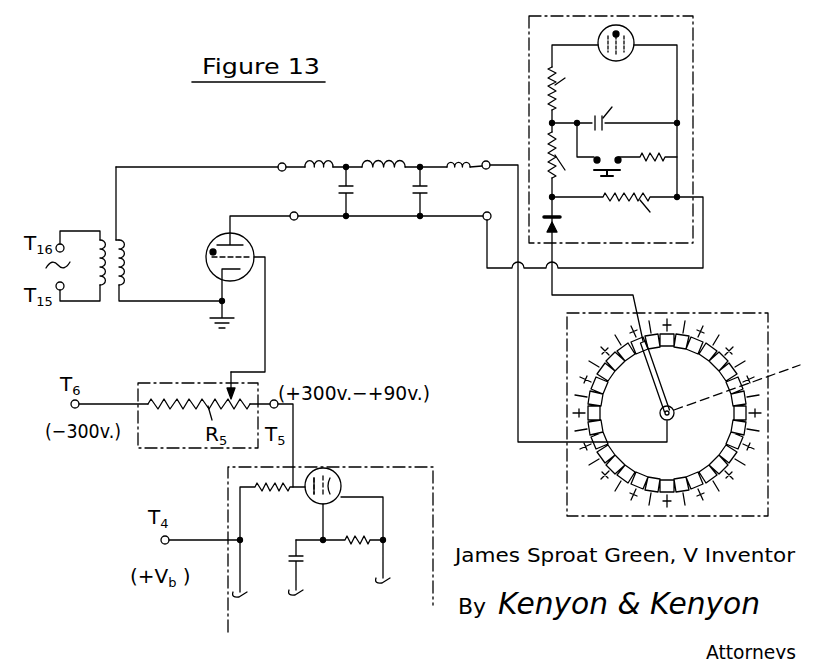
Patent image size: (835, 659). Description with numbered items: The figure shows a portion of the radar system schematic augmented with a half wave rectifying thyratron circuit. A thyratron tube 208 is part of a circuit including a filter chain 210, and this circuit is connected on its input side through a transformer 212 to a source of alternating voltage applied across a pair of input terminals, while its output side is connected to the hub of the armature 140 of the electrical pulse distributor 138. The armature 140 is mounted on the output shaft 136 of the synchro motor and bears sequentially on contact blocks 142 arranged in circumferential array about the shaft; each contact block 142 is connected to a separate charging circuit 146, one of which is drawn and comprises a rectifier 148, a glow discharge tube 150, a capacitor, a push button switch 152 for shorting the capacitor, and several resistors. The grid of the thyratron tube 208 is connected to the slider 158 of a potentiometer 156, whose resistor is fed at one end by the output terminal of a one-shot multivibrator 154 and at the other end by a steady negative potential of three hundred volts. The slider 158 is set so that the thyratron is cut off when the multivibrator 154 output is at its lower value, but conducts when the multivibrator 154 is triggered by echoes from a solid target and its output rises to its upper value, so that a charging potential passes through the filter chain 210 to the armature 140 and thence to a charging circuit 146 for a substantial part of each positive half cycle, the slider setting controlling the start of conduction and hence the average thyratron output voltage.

The output shaft 136 is at (783, 367).
The electrical pulse distributor 138 is at (768, 423).
The armature 140 is at (658, 368).
The contact block 142 is at (686, 348).
The charging circuit 146 is at (694, 72).
The rectifier 148 is at (561, 220).
The glow discharge tube 150 is at (633, 37).
The push button switch 152 is at (621, 171).
The one-shot multivibrator 154 is at (434, 511).
The potentiometer 156 is at (215, 450).
The slider 158 is at (229, 384).
The thyratron tube 208 is at (256, 249).
The filter chain 210 is at (485, 150).
The transformer 212 is at (113, 287).